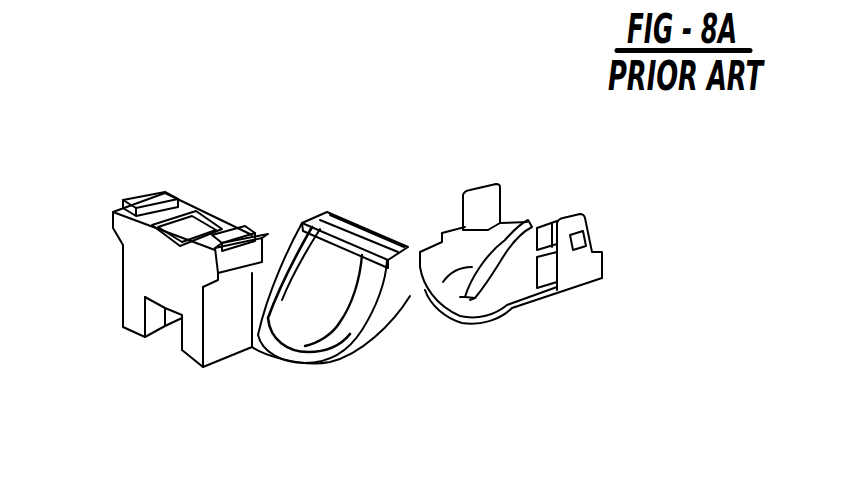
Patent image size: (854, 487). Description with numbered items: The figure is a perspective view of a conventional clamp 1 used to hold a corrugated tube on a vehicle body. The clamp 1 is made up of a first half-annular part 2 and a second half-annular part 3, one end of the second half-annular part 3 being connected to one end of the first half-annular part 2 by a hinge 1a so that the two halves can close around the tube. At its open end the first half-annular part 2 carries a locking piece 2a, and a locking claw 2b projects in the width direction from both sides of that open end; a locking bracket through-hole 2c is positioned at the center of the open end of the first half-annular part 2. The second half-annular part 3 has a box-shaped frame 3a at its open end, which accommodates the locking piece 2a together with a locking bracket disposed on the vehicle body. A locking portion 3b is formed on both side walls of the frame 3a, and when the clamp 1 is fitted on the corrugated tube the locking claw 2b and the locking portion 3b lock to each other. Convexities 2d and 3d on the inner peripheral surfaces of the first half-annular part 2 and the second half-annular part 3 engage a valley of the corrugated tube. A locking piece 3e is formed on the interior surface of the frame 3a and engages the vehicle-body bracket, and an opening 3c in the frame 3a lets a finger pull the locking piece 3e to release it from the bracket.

The clamp 1 is at (281, 234).
The hinge 1a is at (373, 240).
The first half-annular part 2 is at (423, 288).
The locking piece 2a is at (482, 203).
The locking claw 2b is at (598, 218).
The locking bracket through-hole 2c is at (548, 226).
The convexity 2d is at (512, 305).
The second half-annular part 3 is at (312, 305).
The box-shaped frame 3a is at (140, 216).
The locking portion 3b is at (233, 247).
The opening 3c is at (153, 313).
The convexity 3d is at (292, 350).
The locking piece 3e is at (173, 330).